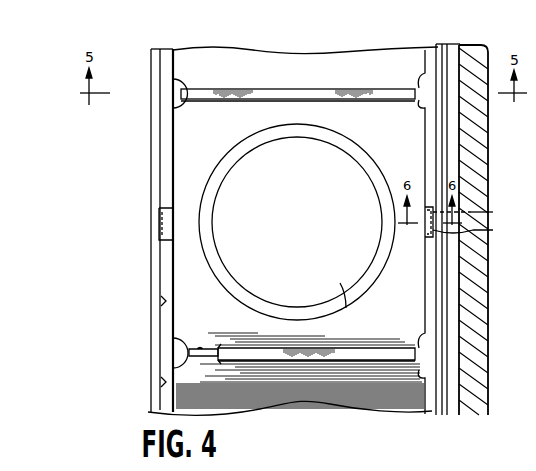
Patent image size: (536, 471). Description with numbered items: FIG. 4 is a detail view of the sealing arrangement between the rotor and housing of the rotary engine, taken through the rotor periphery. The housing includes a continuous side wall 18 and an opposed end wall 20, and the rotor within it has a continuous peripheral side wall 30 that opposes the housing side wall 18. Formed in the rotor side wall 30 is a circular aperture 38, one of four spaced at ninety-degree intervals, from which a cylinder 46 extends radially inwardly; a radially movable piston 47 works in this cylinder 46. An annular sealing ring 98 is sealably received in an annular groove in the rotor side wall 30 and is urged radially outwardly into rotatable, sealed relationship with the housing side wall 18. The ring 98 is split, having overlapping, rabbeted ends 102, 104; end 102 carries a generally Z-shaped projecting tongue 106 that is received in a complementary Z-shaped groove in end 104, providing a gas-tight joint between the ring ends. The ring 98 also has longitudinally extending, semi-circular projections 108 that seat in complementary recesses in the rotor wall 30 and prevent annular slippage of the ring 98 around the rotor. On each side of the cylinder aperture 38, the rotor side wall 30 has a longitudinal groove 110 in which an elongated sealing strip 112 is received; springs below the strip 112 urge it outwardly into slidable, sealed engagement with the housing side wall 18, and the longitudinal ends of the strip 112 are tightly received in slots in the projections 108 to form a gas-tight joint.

The side wall 18 is at (341, 468).
The end wall 20 is at (478, 45).
The peripheral side wall 30 is at (232, 57).
The circular aperture 38 is at (372, 172).
The cylinder 46 is at (364, 280).
The piston 47 is at (345, 305).
The annular sealing ring 98 is at (175, 275).
The rabbeted end 102 is at (424, 230).
The rabbeted end 104 is at (476, 231).
The Z-shaped projecting tongue 106 is at (476, 205).
The semi-circular projection 108 is at (417, 86).
The longitudinal groove 110 is at (193, 348).
The elongated sealing strip 112 is at (221, 362).